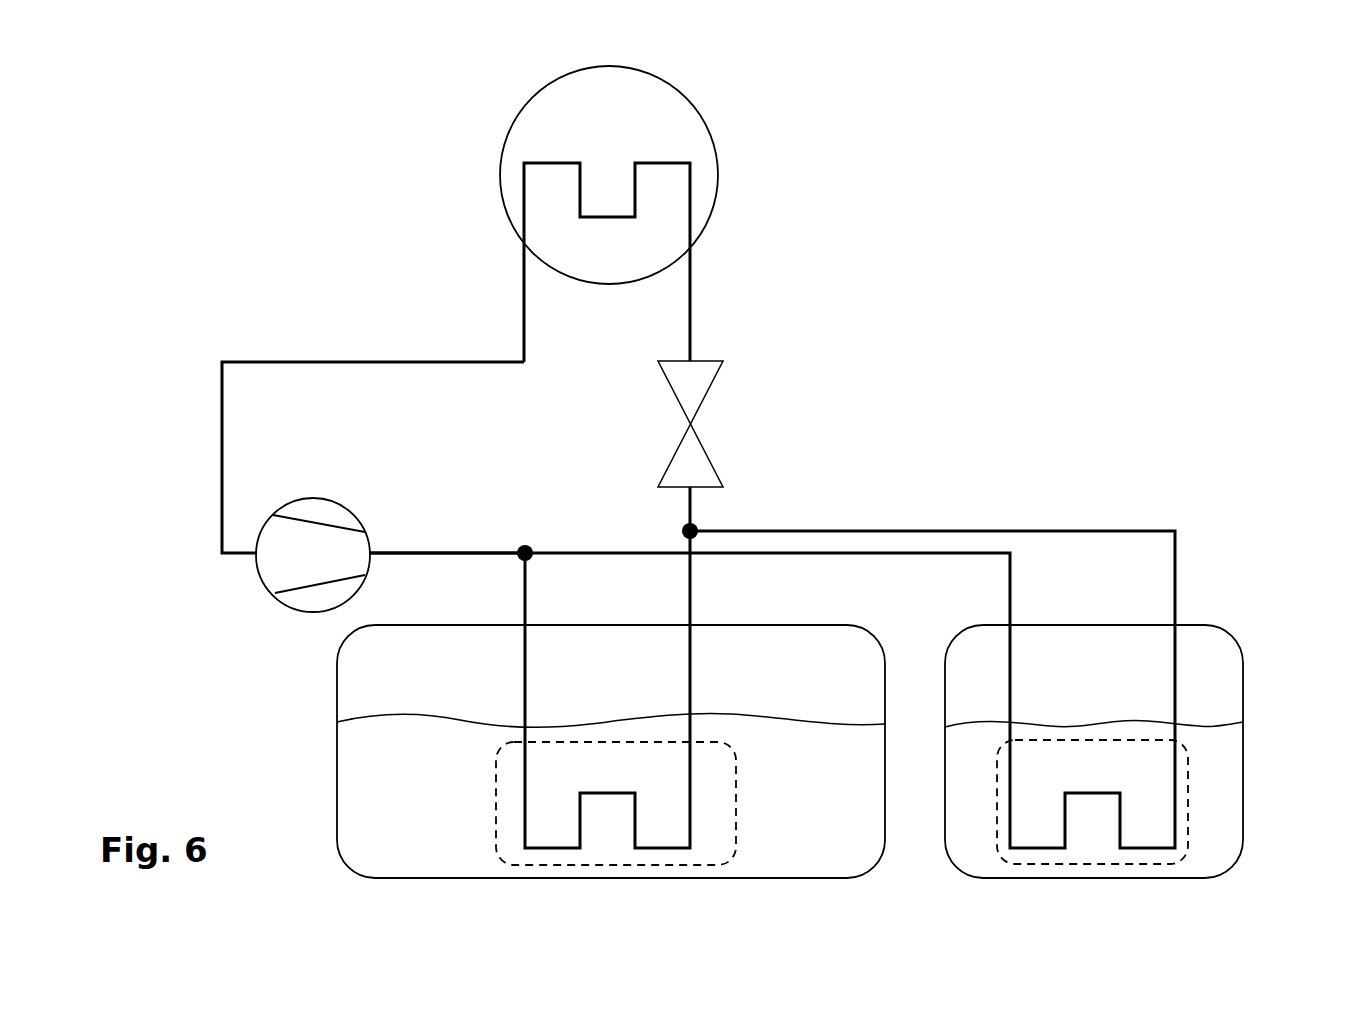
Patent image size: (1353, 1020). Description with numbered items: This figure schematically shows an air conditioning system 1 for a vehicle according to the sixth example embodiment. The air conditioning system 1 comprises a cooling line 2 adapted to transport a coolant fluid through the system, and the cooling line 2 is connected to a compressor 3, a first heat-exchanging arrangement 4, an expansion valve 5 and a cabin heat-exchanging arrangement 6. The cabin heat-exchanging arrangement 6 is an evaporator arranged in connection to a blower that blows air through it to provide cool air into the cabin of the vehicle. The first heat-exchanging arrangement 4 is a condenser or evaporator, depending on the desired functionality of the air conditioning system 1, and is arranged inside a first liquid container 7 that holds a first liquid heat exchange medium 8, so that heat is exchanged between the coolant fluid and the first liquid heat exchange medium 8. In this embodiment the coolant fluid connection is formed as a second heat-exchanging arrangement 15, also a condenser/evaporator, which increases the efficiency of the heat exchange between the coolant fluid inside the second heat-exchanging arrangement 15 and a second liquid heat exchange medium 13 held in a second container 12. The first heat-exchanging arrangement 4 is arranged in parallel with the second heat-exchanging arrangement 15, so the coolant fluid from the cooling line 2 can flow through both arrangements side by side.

The air conditioning system 1 is at (172, 275).
The cooling line 2 is at (425, 556).
The compressor 3 is at (257, 533).
The first heat-exchanging arrangement 4 is at (495, 838).
The expansion valve 5 is at (705, 359).
The cabin heat-exchanging arrangement 6 is at (715, 162).
The first liquid container 7 is at (337, 757).
The first liquid heat exchange medium 8 is at (413, 812).
The second tank 12 is at (1195, 623).
The second liquid heat exchange medium 13 is at (987, 778).
The second heat-exchanging arrangement 15 is at (1102, 793).